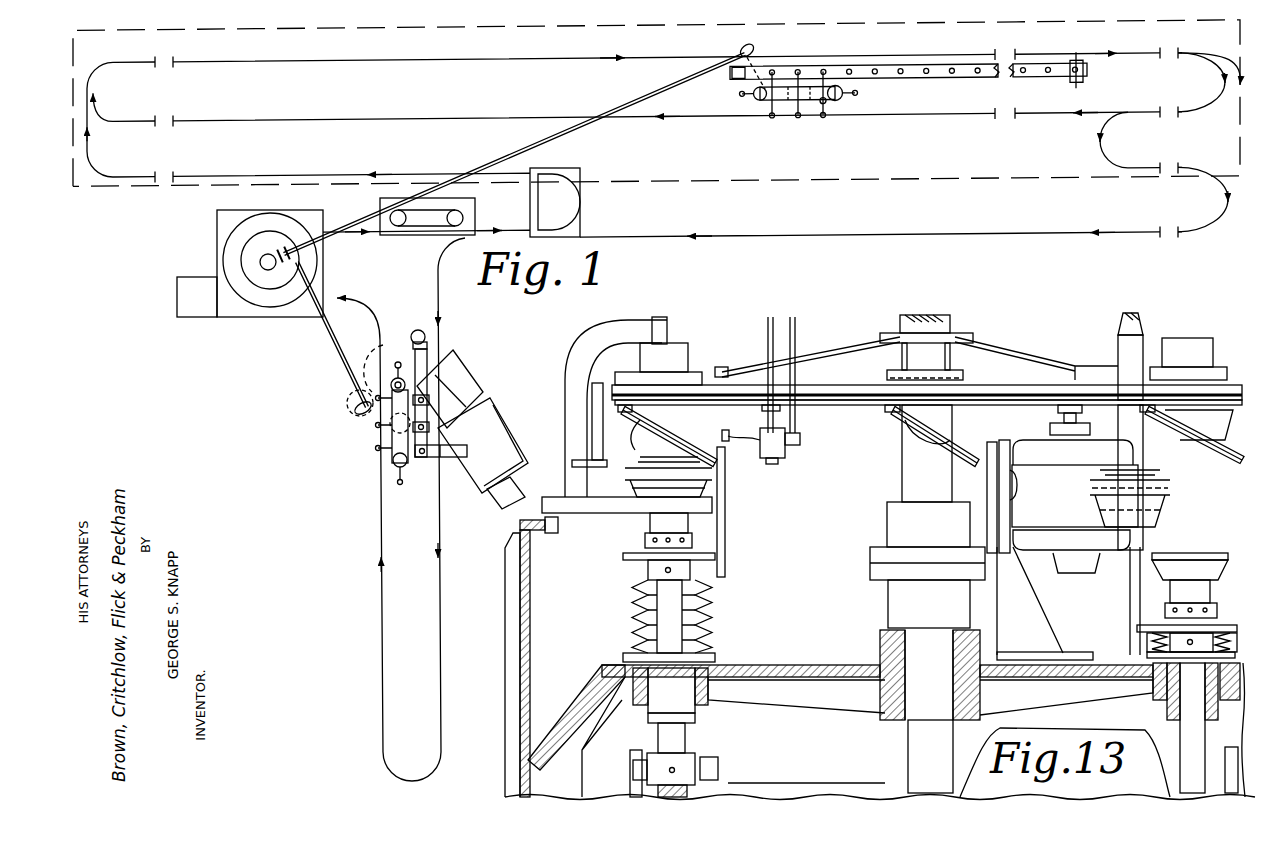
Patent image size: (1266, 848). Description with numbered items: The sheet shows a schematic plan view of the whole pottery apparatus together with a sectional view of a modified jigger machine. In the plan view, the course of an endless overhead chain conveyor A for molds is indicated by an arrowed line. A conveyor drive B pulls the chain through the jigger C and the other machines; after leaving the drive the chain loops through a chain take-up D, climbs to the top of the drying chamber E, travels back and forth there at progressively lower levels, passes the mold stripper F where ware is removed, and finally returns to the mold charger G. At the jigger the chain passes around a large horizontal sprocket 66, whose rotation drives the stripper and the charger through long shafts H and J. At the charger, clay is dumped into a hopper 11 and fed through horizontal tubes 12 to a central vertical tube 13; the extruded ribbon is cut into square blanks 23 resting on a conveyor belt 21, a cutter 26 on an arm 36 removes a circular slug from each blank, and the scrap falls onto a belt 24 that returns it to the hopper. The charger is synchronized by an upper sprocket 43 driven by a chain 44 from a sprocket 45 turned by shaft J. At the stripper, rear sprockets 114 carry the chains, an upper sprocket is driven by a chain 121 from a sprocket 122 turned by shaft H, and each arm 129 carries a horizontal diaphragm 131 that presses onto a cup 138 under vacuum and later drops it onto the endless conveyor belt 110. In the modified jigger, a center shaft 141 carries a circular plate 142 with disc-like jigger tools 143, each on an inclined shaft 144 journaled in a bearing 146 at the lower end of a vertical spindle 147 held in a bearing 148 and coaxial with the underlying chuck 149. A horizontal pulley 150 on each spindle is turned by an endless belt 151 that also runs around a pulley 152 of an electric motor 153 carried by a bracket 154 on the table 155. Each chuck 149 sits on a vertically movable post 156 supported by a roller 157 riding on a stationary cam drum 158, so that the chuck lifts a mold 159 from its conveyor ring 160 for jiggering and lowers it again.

In FIG. 1, the hopper 11 is at (484, 495).
In FIG. 1, the horizontal tubes 12 is at (468, 389).
In FIG. 1, the central vertical tube 13 is at (420, 330).
In FIG. 1, the endless horizontal conveyor belt 21 is at (428, 361).
In FIG. 1, the square blanks 23 is at (410, 364).
In FIG. 1, the belt 24 is at (441, 458).
In FIG. 1, the cutter 26 is at (378, 450).
In FIG. 1, the arm 36 is at (392, 466).
In FIG. 1, the upper sprocket 43 is at (410, 341).
In FIG. 1, the chain 44 is at (364, 366).
In FIG. 1, the sprocket 45 is at (348, 406).
In FIG. 1, the large horizontal sprocket 66 is at (263, 288).
In FIG. 1, the endless conveyor belt 110 is at (954, 88).
In FIG. 1, the horizontal sprockets 114 is at (753, 104).
In FIG. 1, the chain 121 is at (784, 56).
In FIG. 1, the sprocket 122 is at (741, 57).
In FIG. 1, the arm 129 is at (828, 120).
In FIG. 1, the horizontal diaphragm 131 is at (768, 125).
In FIG. 1, the cup 138 is at (888, 73).
In FIG. 13, the center shaft 141 is at (910, 480).
In FIG. 13, the circular plate 142 is at (1010, 386).
In FIG. 13, the jigger tools 143 is at (1218, 462).
In FIG. 13, the inclined shaft 144 is at (950, 432).
In FIG. 13, the bearing 146 is at (700, 421).
In FIG. 13, the vertical spindle 147 is at (683, 388).
In FIG. 13, the bearing 148 is at (668, 355).
In FIG. 13, the chuck 149 is at (634, 476).
In FIG. 13, the horizontal pulley 150 is at (632, 414).
In FIG. 13, the endless belt 151 is at (800, 405).
In FIG. 13, the pulley 152 is at (1048, 410).
In FIG. 13, the electric motor 153 is at (1098, 560).
In FIG. 13, the bracket 154 is at (988, 495).
In FIG. 13, the table 155 is at (790, 666).
In FIG. 13, the vertically movable post 156 is at (668, 618).
In FIG. 13, the roller 157 is at (718, 760).
In FIG. 13, the stationary cam drum 158 is at (798, 790).
In FIG. 13, the mold 159 is at (1172, 498).
In FIG. 13, the conveyor ring 160 is at (665, 510).
In FIG. 1, the endless overhead chain conveyor A is at (840, 239).
In FIG. 1, the conveyor drive B is at (478, 212).
In FIG. 1, the jigger C is at (250, 276).
In FIG. 1, the chain take-up D is at (585, 213).
In FIG. 1, the drying chamber E is at (783, 185).
In FIG. 1, the mold stripper F is at (846, 109).
In FIG. 1, the mold charger G is at (413, 476).
In FIG. 1, the shaft H is at (519, 151).
In FIG. 1, the shaft J is at (332, 356).